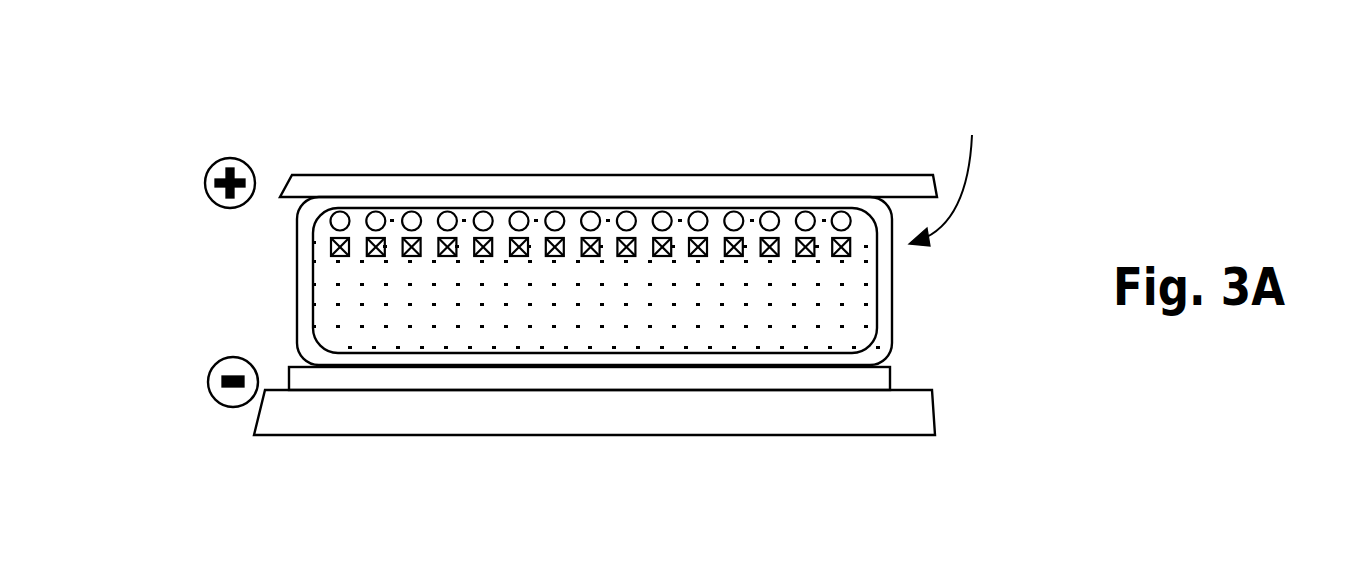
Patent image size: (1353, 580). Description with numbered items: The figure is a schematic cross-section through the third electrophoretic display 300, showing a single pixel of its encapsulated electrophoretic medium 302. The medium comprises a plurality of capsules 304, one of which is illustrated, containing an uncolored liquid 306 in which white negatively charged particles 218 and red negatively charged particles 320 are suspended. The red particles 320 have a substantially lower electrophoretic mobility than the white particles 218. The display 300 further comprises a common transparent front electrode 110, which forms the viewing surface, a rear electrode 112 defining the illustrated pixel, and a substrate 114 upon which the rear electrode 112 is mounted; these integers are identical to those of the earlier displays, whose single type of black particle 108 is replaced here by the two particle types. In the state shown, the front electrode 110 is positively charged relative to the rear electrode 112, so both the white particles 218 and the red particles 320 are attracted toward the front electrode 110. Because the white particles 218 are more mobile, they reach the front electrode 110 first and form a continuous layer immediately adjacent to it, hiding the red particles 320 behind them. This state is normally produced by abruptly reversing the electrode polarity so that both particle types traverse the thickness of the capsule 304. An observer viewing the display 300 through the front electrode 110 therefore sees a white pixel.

The third electrophoretic display 300 is at (317, 143).
The particle 108 is at (553, 348).
The front electrode 110 is at (651, 175).
The rear electrode 112 is at (892, 378).
The substrate 114 is at (933, 405).
The white particle 218 is at (444, 217).
The encapsulated electrophoretic medium 302 is at (952, 166).
The capsule 304 is at (892, 299).
The liquid 306 is at (768, 290).
The red particle 320 is at (331, 245).